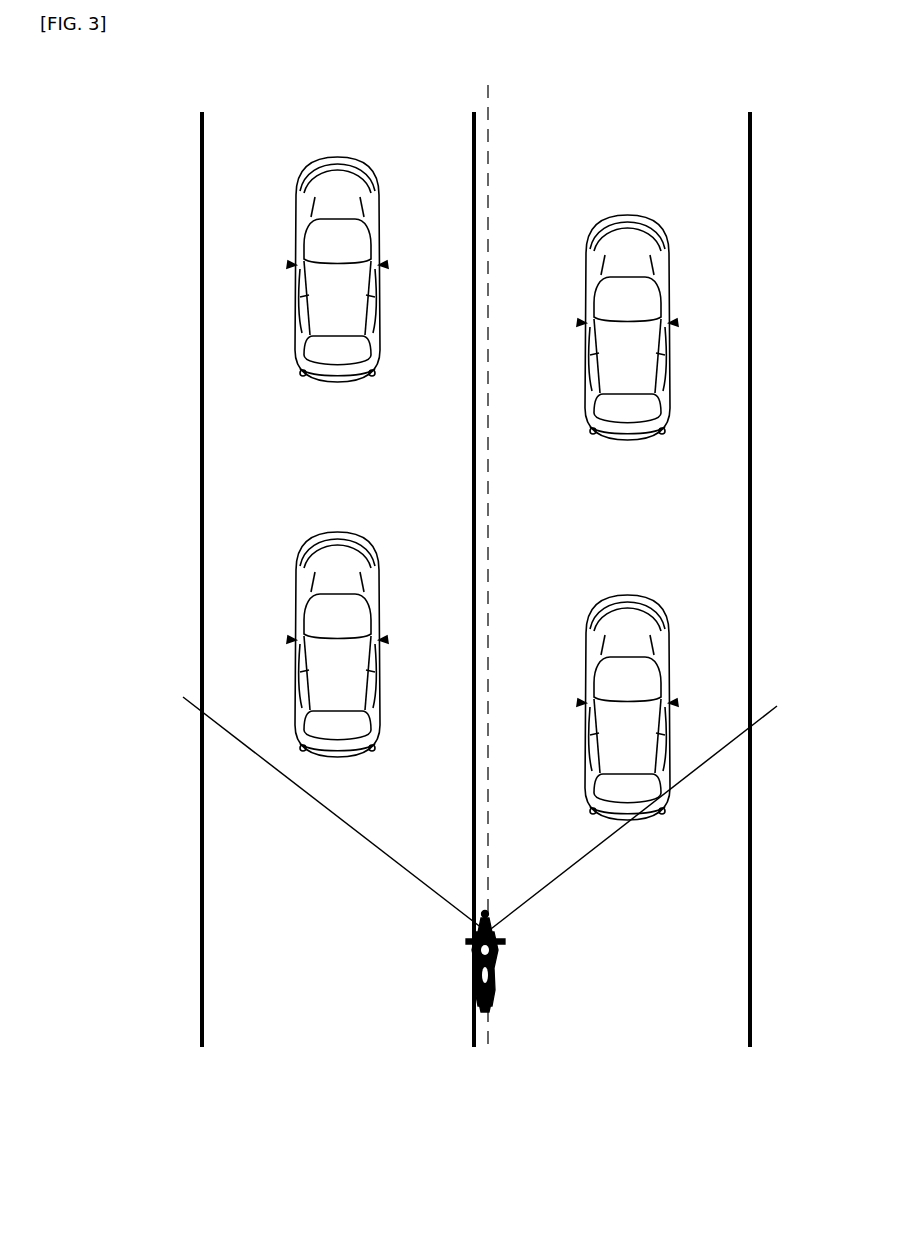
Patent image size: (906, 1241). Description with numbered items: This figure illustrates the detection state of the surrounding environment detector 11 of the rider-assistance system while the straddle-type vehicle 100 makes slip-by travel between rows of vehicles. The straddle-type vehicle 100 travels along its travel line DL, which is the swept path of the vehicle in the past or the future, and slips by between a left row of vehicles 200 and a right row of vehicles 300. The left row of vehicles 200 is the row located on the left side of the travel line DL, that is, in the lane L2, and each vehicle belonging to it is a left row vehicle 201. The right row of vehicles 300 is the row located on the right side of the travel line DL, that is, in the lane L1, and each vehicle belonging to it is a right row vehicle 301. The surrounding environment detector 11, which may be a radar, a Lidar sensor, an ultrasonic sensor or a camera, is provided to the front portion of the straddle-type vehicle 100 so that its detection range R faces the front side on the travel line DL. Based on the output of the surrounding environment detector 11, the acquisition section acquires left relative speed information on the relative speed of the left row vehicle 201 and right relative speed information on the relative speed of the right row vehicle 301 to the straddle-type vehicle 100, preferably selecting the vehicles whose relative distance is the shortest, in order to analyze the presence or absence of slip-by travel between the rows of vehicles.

The left row of vehicles 200 is at (334, 414).
The left row vehicle 201 is at (343, 179).
The right row of vehicles 300 is at (645, 445).
The right row vehicle 301 is at (634, 233).
The straddle-type vehicle 100 is at (515, 961).
The surrounding environment detector 11 is at (493, 930).
The detection range R is at (368, 848).
The travel line DL is at (489, 111).
The lane L1 is at (703, 1023).
The lane L2 is at (245, 1023).